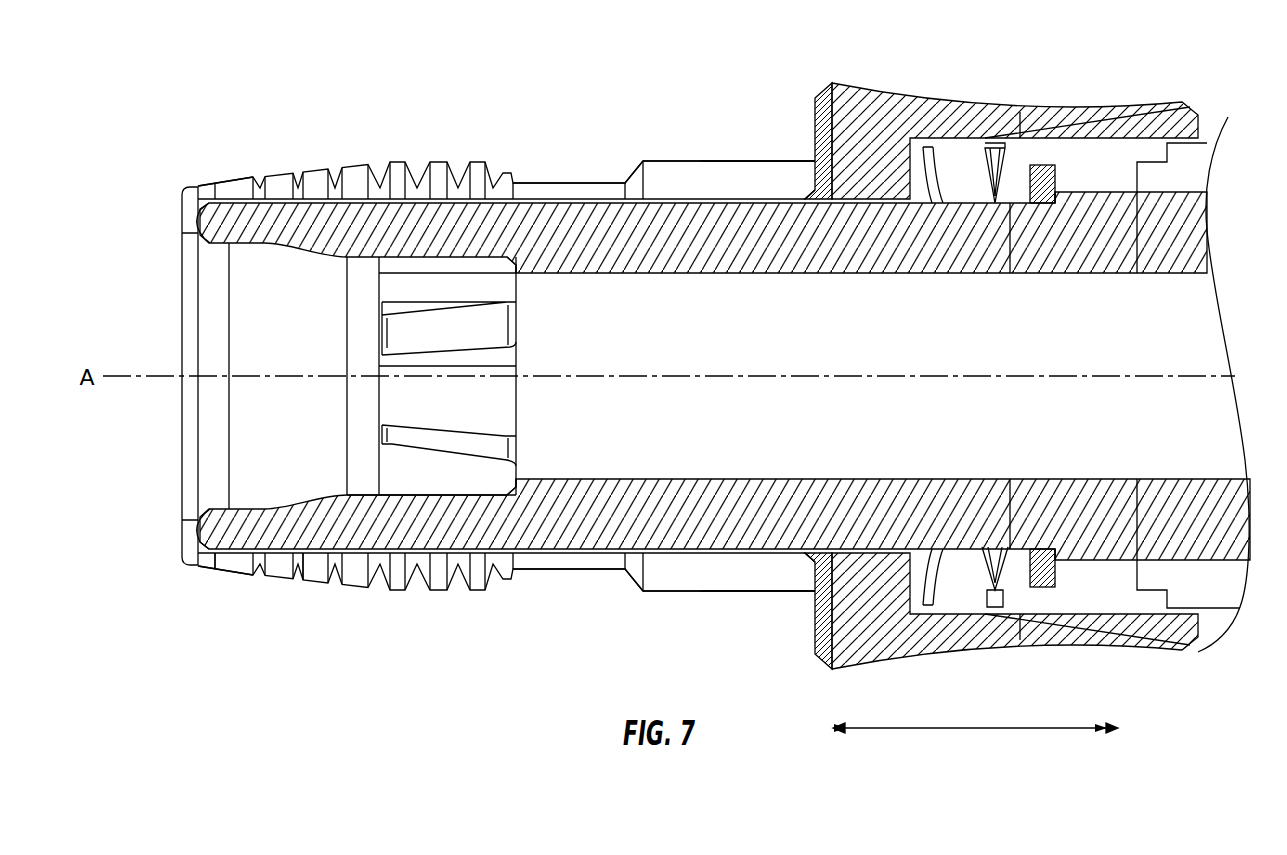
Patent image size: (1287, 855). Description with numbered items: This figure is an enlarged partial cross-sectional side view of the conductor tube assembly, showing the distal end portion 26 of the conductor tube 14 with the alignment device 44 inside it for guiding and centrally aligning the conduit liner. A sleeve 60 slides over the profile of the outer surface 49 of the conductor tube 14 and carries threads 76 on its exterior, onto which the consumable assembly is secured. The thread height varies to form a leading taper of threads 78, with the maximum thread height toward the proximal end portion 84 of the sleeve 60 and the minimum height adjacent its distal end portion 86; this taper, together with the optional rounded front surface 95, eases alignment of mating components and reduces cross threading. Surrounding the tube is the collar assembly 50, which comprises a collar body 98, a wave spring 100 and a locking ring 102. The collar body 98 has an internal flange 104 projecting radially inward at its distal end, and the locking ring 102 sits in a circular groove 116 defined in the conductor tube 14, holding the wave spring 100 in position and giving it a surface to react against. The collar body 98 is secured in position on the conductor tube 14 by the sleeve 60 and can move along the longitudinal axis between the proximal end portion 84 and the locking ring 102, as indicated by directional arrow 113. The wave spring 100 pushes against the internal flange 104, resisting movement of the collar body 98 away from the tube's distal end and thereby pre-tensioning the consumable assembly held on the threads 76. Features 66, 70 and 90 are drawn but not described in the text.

The conductor tube 14 is at (580, 522).
The distal end portion 26 is at (235, 535).
The alignment device 44 is at (437, 480).
The outer surface 49 is at (320, 556).
The collar assembly 50 is at (978, 90).
The sleeve 60 is at (694, 572).
The inner bore shoulder 66 is at (253, 510).
The internal shoulder 70 is at (524, 258).
The threads 76 is at (396, 147).
The leading taper of threads 78 is at (193, 152).
The proximal end portion 84 is at (795, 598).
The distal end portion 86 is at (223, 582).
The seal 90 is at (200, 228).
The rounded front surface 95 is at (182, 196).
The collar body 98 is at (900, 100).
The wave spring 100 is at (993, 143).
The locking ring 102 is at (1042, 170).
The internal flange 104 is at (910, 170).
The directional arrow 113 is at (977, 730).
The circular groove 116 is at (1022, 552).